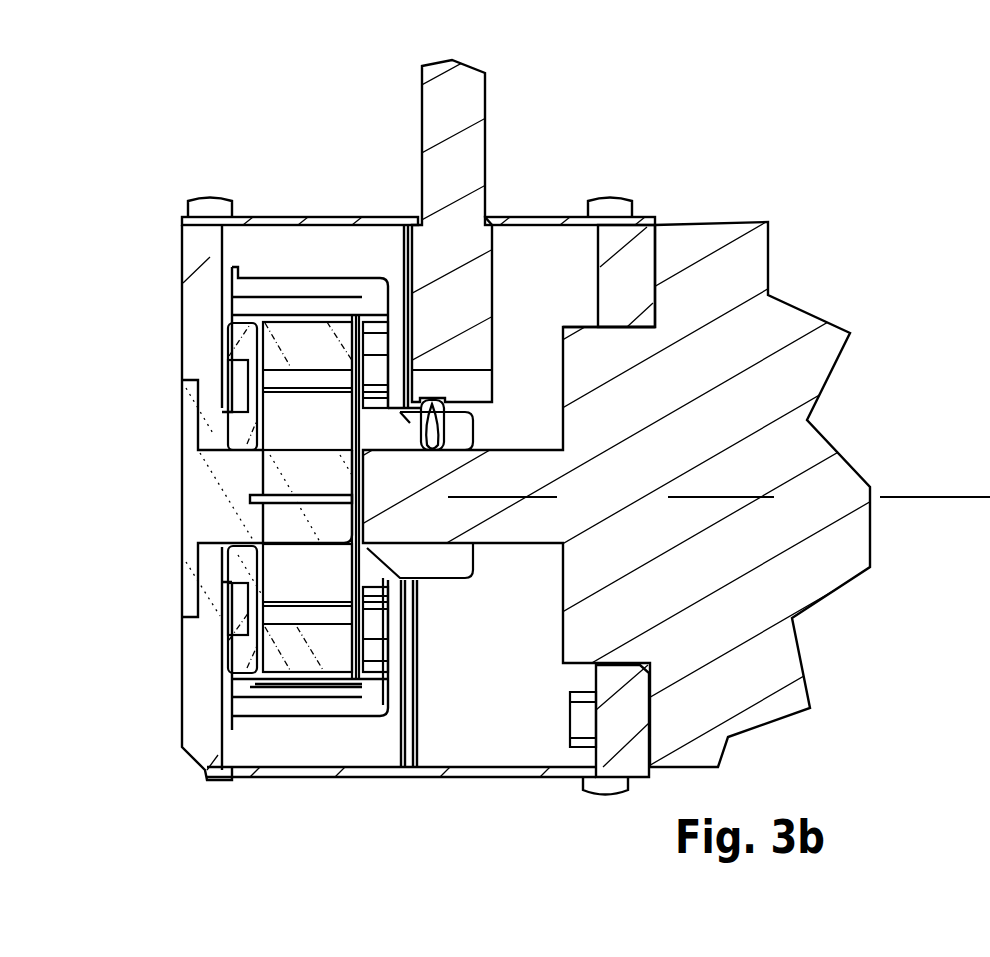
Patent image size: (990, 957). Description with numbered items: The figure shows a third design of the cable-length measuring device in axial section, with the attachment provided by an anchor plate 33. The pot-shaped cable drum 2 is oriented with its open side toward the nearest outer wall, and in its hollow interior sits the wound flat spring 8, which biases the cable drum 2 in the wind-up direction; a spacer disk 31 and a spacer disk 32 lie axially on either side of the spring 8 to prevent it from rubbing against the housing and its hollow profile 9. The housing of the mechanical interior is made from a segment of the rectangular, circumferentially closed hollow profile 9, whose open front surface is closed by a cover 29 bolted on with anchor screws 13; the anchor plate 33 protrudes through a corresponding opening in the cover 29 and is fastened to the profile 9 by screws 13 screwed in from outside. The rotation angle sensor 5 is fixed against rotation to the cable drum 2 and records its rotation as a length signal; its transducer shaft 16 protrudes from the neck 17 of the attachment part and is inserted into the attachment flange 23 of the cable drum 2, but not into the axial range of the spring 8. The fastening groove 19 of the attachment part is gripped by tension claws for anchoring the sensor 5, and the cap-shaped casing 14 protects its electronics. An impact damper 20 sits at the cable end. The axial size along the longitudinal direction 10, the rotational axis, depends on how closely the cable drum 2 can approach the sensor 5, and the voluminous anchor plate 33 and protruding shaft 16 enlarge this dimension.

The cable drum 2 is at (347, 272).
The rotation angle sensor 5 is at (181, 476).
The spring 8 is at (308, 316).
The hollow profile 9 is at (366, 781).
The longitudinal direction 10 is at (915, 497).
The anchor screws 13 is at (204, 199).
The cap-shaped casing 14 is at (437, 396).
The transducer shaft 16 is at (611, 520).
The neck 17 is at (581, 793).
The fastening groove 19 is at (268, 688).
The impact damper 20 is at (566, 732).
The attachment flange 23 is at (432, 573).
The cover 29 is at (546, 215).
The spacer disk 31 is at (249, 316).
The spacer disk 32 is at (363, 316).
The anchor plate 33 is at (472, 104).